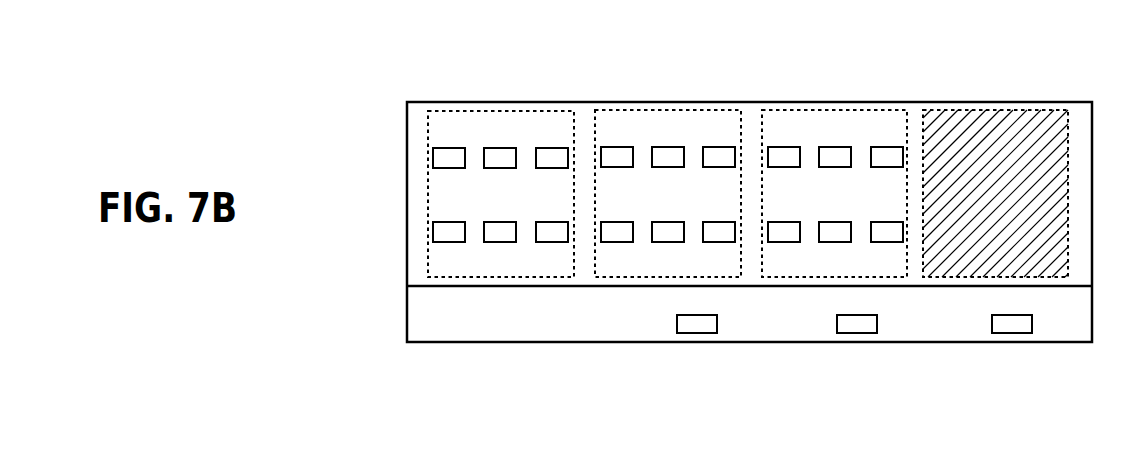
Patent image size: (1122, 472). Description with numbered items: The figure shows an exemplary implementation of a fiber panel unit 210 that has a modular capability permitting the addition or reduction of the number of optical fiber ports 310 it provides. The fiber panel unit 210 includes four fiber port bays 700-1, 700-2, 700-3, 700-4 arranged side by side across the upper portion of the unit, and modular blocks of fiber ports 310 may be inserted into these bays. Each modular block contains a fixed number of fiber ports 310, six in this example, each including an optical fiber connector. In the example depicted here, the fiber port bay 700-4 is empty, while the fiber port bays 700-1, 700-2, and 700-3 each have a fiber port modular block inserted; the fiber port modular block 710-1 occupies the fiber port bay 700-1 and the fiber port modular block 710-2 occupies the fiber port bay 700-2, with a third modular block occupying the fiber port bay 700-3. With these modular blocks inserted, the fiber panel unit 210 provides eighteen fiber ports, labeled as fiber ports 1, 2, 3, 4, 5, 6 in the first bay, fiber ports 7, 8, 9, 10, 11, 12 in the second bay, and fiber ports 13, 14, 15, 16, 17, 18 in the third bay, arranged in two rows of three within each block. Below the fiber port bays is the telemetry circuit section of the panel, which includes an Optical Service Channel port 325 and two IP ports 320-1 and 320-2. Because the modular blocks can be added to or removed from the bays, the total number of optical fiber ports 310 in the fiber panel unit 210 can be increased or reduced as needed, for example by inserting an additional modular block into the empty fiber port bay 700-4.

The fiber panel unit 210 is at (398, 81).
The optical fiber port 310 is at (408, 146).
The fiber port modular block 710-1 is at (486, 260).
The fiber port modular block 710-2 is at (641, 262).
The fiber port bay 700-1 is at (448, 163).
The fiber port bay 700-2 is at (669, 160).
The fiber port bay 700-3 is at (836, 160).
The fiber port bay 700-4 is at (1070, 93).
The Optical Service Channel (OSC) port 325 is at (697, 345).
The IP port 320-1 is at (857, 345).
The IP port 320-2 is at (1012, 345).
The fiber port 1 is at (449, 146).
The fiber port 2 is at (449, 220).
The fiber port 3 is at (500, 146).
The fiber port 4 is at (500, 220).
The fiber port 5 is at (552, 146).
The fiber port 6 is at (552, 220).
The fiber port 7 is at (617, 145).
The fiber port 8 is at (617, 220).
The fiber port 9 is at (668, 145).
The fiber port 10 is at (668, 220).
The fiber port 11 is at (719, 145).
The fiber port 12 is at (719, 220).
The fiber port 13 is at (784, 145).
The fiber port 14 is at (784, 220).
The fiber port 15 is at (835, 145).
The fiber port 16 is at (835, 220).
The fiber port 17 is at (887, 145).
The fiber port 18 is at (887, 220).